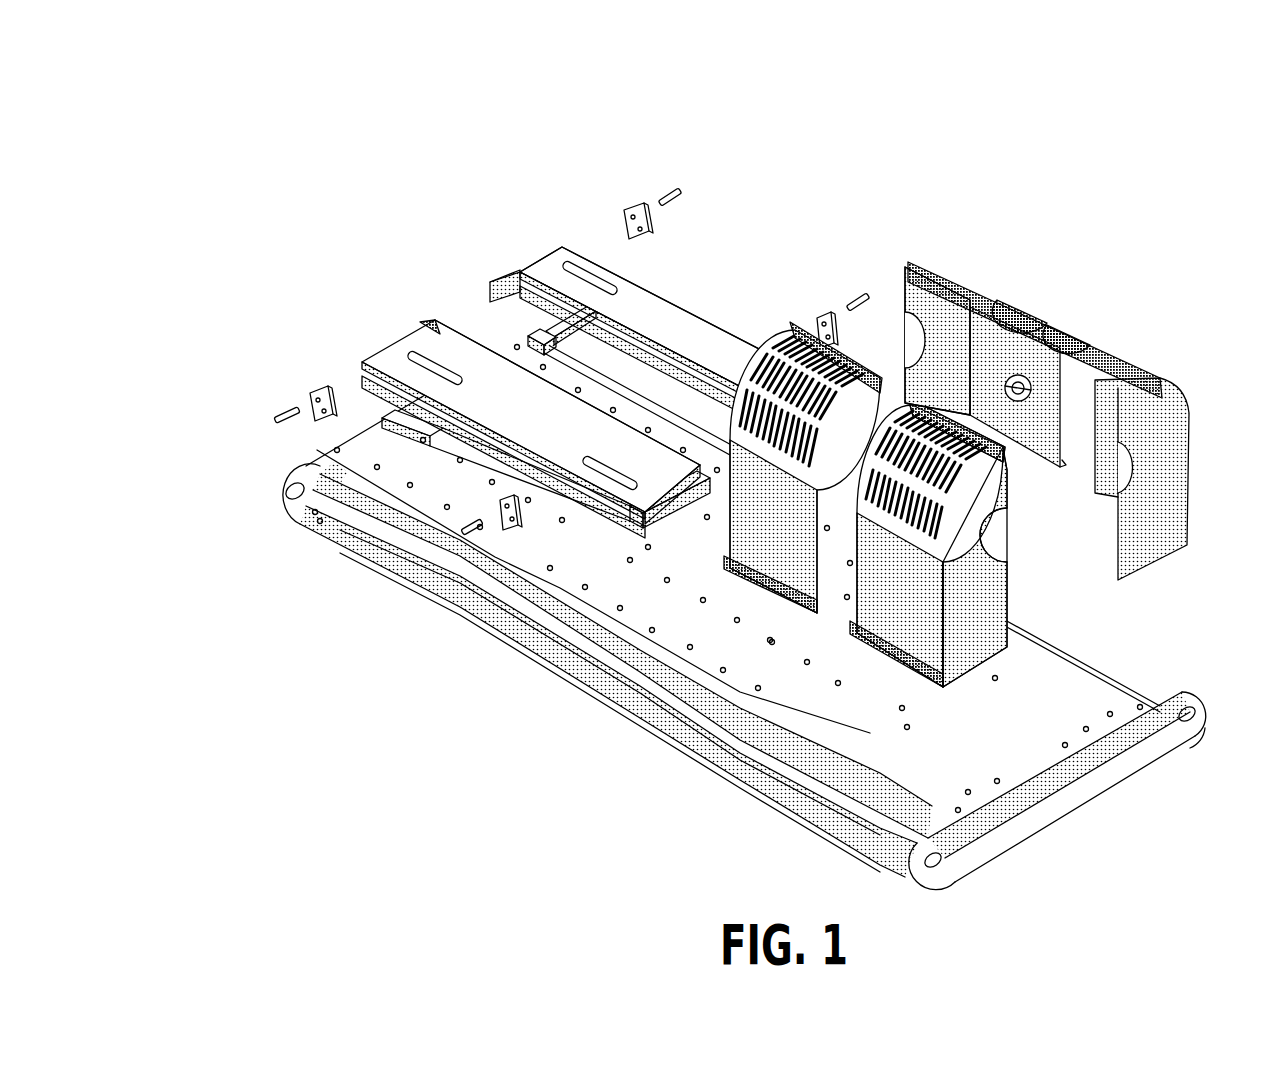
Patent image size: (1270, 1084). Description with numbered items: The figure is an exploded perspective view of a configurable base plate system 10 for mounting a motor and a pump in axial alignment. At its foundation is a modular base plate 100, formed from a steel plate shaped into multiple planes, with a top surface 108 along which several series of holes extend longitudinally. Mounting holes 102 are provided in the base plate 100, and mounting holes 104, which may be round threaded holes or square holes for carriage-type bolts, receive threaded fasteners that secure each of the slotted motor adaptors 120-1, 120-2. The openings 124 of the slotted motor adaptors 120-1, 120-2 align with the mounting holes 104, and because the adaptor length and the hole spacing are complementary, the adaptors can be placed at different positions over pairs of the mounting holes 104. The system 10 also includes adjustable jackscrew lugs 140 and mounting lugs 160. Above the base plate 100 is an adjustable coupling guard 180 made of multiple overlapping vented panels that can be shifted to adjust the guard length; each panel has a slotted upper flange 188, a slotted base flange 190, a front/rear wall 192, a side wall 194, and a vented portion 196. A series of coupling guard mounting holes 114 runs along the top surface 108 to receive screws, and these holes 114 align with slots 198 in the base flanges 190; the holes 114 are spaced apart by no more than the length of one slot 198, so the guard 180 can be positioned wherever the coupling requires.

The configurable base plate system 10 is at (381, 120).
The modular base plate 100 is at (695, 768).
The mounting holes 102 is at (1065, 747).
The mounting holes 104 is at (630, 562).
The top surface 108 is at (1097, 688).
The coupling guard mounting holes 114 is at (853, 722).
The slotted motor adaptor 120-1 is at (391, 330).
The slotted motor adaptor 120-2 is at (708, 316).
The openings 124 is at (697, 490).
The adjustable jackscrew lugs 140 is at (640, 195).
The mounting lugs 160 is at (698, 482).
The adjustable coupling guard 180 is at (1085, 328).
The slotted upper flange 188 is at (1007, 448).
The slotted base flange 190 is at (997, 784).
The front/rear wall 192 is at (1088, 731).
The side wall 194 is at (893, 652).
The vented portion 196 is at (1010, 508).
The slots 198 is at (969, 664).